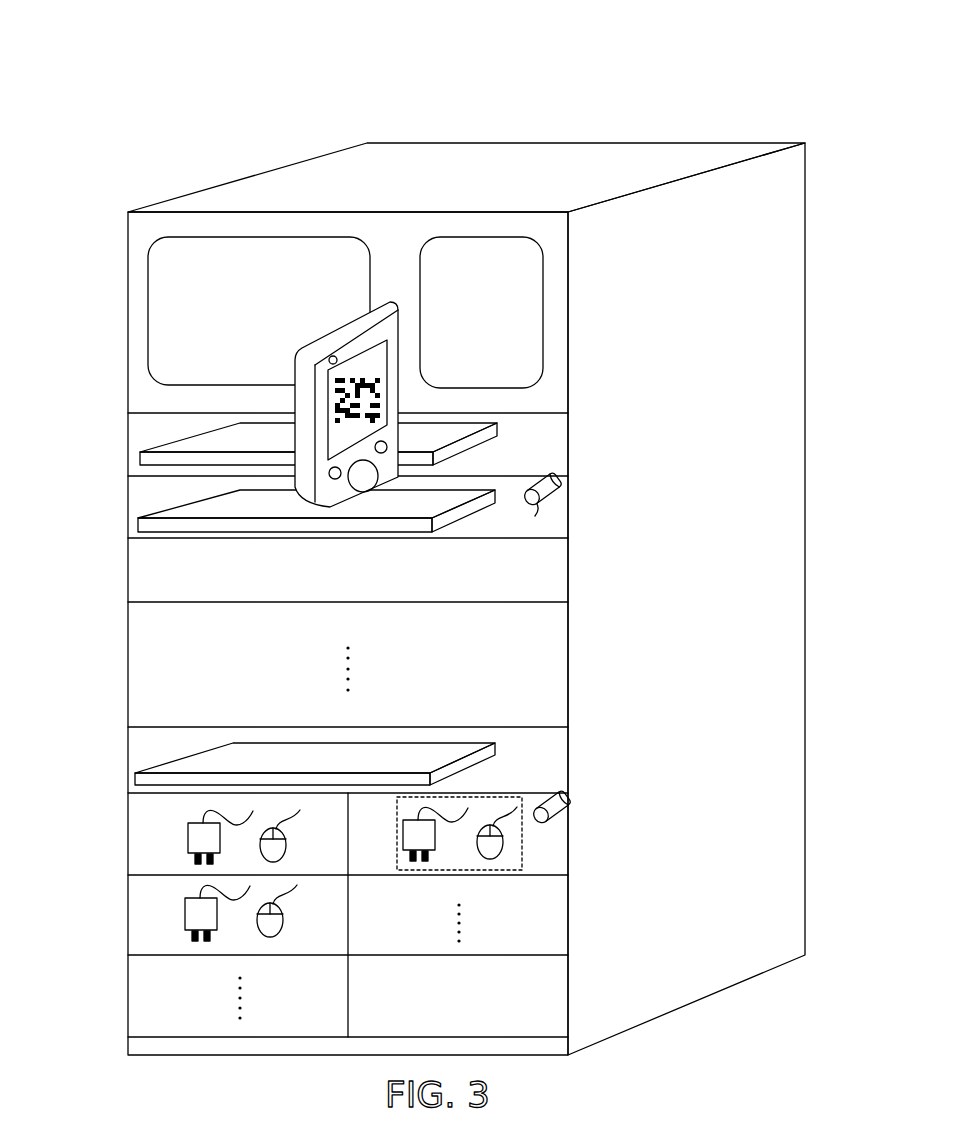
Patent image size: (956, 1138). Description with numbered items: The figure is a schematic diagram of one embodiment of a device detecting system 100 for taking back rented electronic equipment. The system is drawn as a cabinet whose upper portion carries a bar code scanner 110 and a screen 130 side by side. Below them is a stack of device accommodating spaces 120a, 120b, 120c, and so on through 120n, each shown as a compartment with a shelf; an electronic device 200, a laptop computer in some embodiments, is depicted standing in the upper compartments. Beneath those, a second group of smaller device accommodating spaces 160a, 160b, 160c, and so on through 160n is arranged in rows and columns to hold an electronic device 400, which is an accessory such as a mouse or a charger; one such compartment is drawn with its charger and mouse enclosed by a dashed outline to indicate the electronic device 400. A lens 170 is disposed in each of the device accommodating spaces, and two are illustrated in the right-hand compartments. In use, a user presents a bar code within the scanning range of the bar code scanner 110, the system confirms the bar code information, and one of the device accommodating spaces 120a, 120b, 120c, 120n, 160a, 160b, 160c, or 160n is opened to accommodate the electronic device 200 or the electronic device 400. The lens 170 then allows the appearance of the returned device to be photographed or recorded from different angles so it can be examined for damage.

The device detecting system 100 is at (578, 88).
The bar code scanner 110 is at (499, 322).
The screen 130 is at (278, 321).
The device accommodating space 120a is at (568, 450).
The device accommodating space 120b is at (568, 520).
The device accommodating space 120c is at (568, 582).
The device accommodating space 120n is at (568, 768).
The electronic device 200 is at (160, 512).
The lens 170 is at (547, 662).
The device accommodating space 160a is at (128, 847).
The device accommodating space 160b is at (568, 840).
The device accommodating space 160c is at (128, 935).
The device accommodating space 160n is at (568, 1005).
The electronic device 400 is at (397, 840).